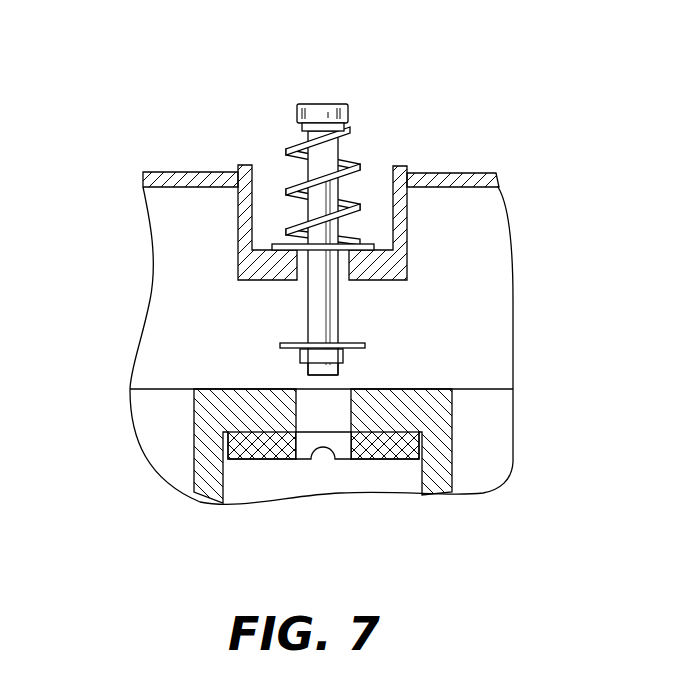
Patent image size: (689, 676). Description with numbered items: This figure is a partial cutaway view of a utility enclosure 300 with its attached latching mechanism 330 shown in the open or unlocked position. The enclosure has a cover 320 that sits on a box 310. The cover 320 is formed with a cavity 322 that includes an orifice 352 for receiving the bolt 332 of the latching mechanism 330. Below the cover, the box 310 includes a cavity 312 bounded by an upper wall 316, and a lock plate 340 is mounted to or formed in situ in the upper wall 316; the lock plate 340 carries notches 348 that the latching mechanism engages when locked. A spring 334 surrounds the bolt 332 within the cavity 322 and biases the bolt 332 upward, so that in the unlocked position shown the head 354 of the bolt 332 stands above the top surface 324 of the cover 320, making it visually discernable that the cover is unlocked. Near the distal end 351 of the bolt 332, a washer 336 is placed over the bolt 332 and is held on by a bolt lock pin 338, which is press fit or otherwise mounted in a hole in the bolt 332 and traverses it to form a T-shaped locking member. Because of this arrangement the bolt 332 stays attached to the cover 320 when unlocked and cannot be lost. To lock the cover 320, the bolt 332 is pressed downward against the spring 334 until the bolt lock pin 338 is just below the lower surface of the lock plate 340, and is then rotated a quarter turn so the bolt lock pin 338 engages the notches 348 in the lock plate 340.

The utility enclosure 300 is at (524, 88).
The box 310 is at (193, 449).
The cavity 312 is at (238, 497).
The upper wall 316 is at (232, 402).
The cover 320 is at (175, 300).
The cavity 322 is at (270, 188).
The top surface 324 is at (162, 173).
The latching mechanism 330 is at (373, 152).
The bolt 332 is at (336, 73).
The spring 334 is at (332, 210).
The washer 336 is at (368, 334).
The bolt lock pin 338 is at (345, 360).
The lock plate 340 is at (376, 462).
The notches 348 is at (327, 455).
The distal end 351 is at (307, 372).
The orifice 352 is at (345, 286).
The head 354 is at (315, 108).